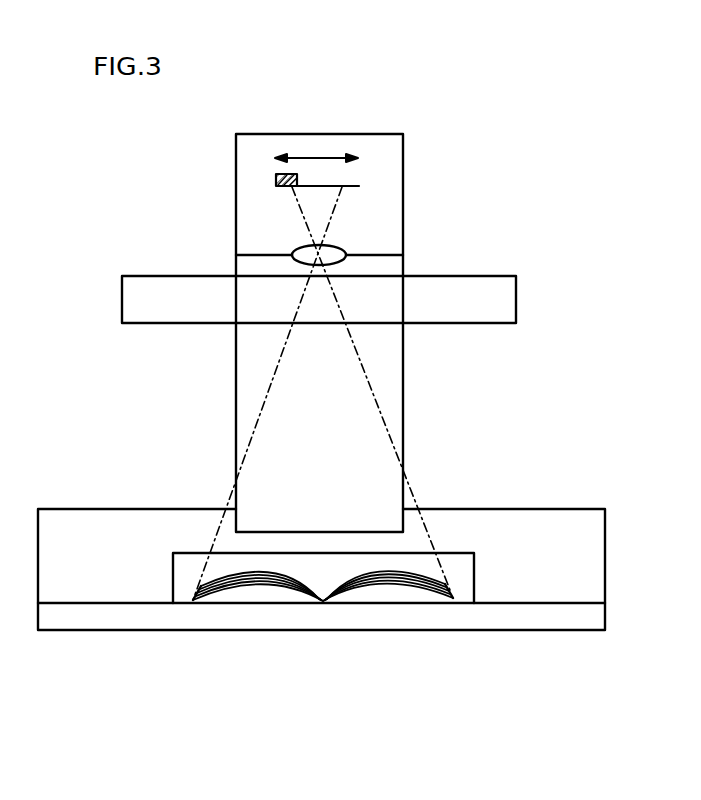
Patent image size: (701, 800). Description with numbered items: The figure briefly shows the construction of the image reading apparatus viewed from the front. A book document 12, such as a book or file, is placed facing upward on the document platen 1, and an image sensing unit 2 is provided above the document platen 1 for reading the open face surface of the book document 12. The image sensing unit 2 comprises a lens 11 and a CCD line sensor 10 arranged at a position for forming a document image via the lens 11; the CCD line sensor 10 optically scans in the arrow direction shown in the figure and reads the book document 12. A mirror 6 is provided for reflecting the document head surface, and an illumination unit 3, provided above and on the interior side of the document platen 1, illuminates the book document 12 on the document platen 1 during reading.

The document platen 1 is at (585, 603).
The image sensing unit 2 is at (388, 172).
The illumination unit 3 is at (507, 276).
The mirror 6 is at (472, 554).
The CCD line sensor 10 is at (276, 180).
The lens 11 is at (346, 260).
The book document 12 is at (398, 573).